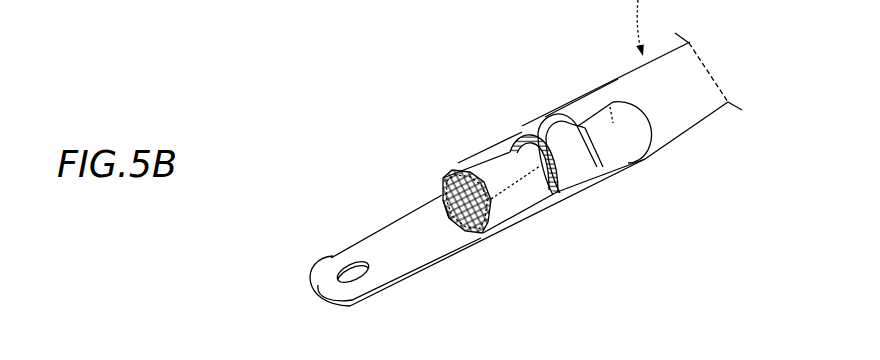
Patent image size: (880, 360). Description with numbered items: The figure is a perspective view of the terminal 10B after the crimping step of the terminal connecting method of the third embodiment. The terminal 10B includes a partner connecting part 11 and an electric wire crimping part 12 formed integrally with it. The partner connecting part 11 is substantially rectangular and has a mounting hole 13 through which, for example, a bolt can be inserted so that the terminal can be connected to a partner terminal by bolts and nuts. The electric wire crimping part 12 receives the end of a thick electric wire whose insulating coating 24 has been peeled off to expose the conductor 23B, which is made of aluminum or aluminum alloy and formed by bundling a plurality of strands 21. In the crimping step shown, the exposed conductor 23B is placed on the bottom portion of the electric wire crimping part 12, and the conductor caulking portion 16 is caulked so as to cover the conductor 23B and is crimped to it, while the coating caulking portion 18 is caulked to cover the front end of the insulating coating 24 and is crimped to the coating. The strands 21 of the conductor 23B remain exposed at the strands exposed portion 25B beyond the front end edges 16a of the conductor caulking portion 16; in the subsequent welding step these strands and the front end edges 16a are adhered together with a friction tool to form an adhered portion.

The terminal 10B is at (570, 207).
The partner connecting part 11 is at (343, 258).
The electric wire crimping part 12 is at (567, 24).
The mounting hole 13 is at (383, 0).
The conductor caulking portion 16 is at (474, 182).
The front end edges 16a is at (469, 236).
The coating caulking portion 18 is at (610, 98).
The strands 21 is at (438, 203).
The conductor 23B is at (537, 136).
The insulating coating 24 is at (666, 102).
The strands exposed portion 25B is at (445, 236).